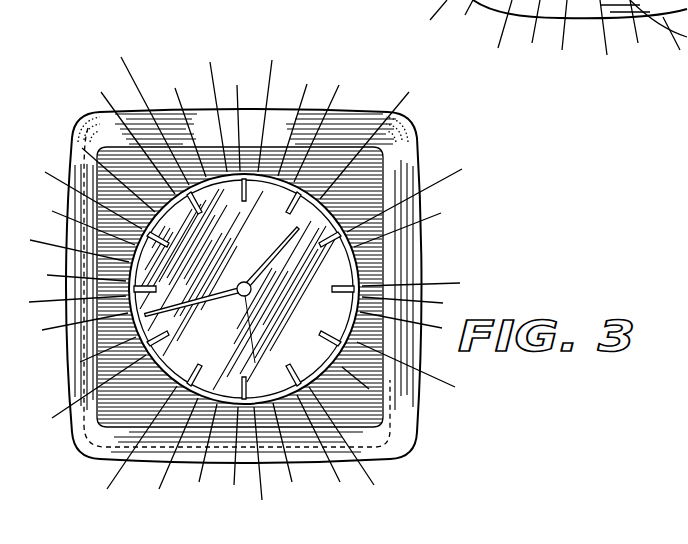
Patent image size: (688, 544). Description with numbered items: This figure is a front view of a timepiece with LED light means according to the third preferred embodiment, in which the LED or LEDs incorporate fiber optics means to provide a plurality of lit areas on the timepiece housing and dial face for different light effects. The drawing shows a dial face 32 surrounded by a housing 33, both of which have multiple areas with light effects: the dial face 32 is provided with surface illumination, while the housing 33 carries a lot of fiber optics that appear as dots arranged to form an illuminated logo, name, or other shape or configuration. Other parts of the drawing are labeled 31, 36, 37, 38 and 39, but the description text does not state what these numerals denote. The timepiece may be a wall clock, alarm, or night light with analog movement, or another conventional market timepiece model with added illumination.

The bezel 31 is at (319, 150).
The dial face 32 is at (317, 267).
The housing 33 is at (395, 372).
The case corner 36 is at (97, 117).
The case top portion 37 is at (197, 118).
The case corner 38 is at (402, 127).
The case bottom portion 39 is at (375, 457).